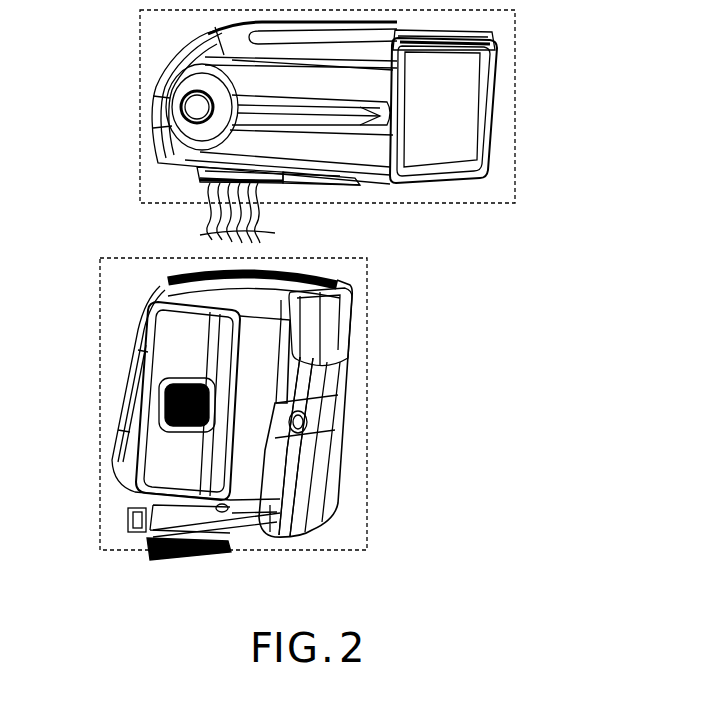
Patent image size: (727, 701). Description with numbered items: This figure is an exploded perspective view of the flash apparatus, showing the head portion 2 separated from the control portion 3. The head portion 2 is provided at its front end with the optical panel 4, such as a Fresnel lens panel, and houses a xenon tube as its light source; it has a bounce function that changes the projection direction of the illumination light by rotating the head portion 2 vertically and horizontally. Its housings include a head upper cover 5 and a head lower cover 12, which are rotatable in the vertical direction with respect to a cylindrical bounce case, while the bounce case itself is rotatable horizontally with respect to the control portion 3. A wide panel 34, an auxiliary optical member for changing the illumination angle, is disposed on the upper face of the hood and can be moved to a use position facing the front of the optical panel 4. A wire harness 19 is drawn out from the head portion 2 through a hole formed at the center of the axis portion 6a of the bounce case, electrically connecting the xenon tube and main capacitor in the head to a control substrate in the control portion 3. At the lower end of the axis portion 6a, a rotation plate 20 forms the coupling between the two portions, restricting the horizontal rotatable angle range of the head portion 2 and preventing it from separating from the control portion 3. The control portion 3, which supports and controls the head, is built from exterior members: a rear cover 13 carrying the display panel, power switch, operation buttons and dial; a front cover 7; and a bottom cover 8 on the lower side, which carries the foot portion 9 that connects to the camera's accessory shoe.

The head portion 2 is at (442, 203).
The control portion 3 is at (368, 388).
The optical panel 4 is at (445, 122).
The head upper cover 5 is at (237, 46).
The axis portion 6a is at (197, 170).
The front cover 7 is at (260, 455).
The bottom cover 8 is at (235, 535).
The foot portion 9 is at (210, 557).
The head lower cover 12 is at (360, 153).
The rear cover 13 is at (176, 290).
The wire harness 19 is at (213, 215).
The rotation plate 20 is at (268, 184).
The wide panel 34 is at (490, 42).